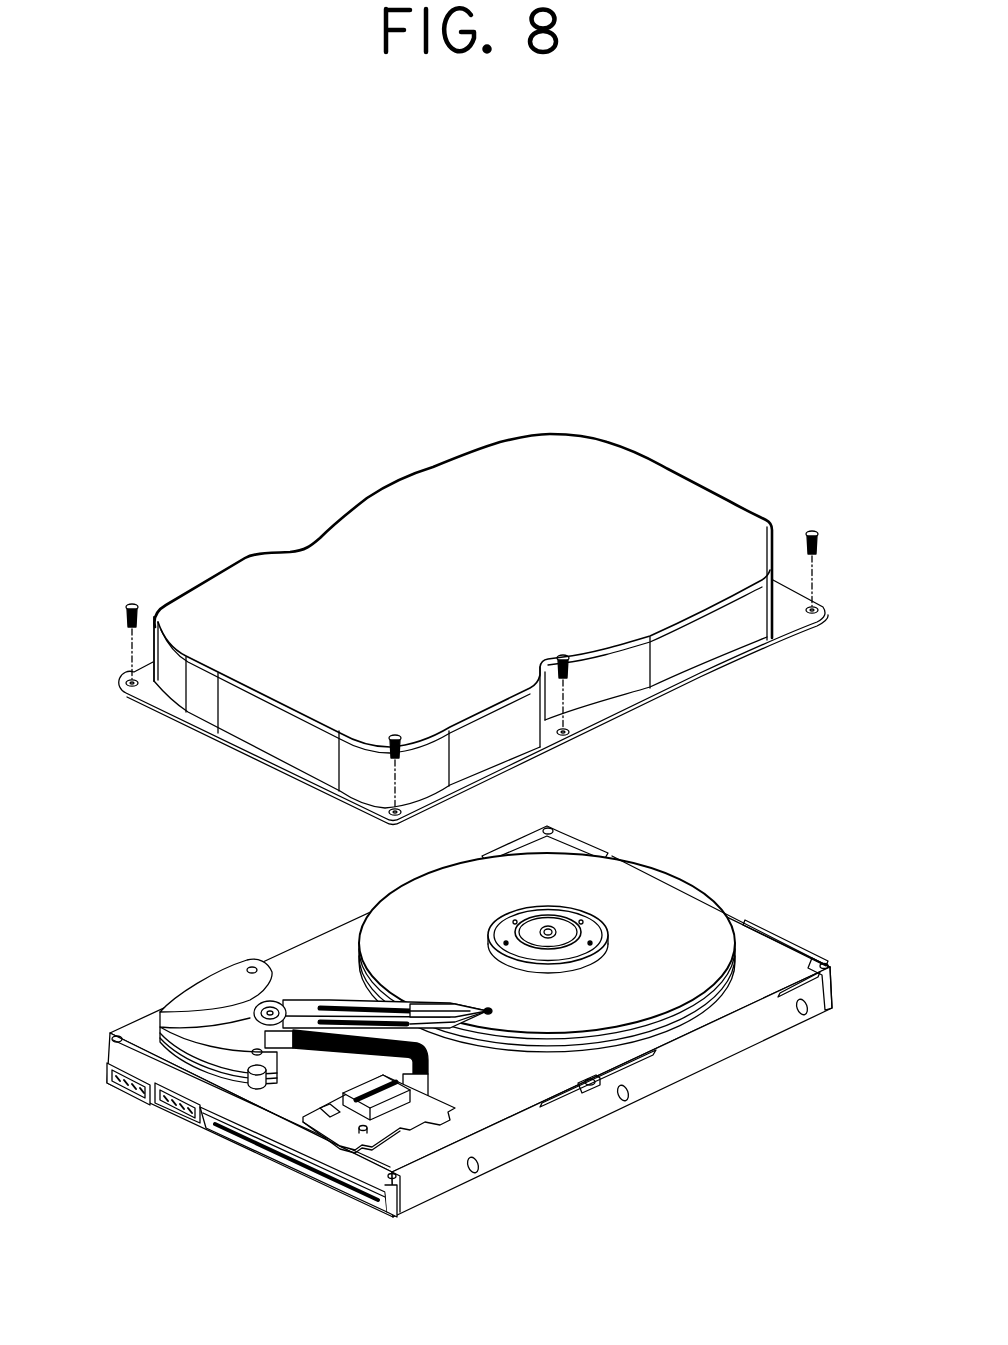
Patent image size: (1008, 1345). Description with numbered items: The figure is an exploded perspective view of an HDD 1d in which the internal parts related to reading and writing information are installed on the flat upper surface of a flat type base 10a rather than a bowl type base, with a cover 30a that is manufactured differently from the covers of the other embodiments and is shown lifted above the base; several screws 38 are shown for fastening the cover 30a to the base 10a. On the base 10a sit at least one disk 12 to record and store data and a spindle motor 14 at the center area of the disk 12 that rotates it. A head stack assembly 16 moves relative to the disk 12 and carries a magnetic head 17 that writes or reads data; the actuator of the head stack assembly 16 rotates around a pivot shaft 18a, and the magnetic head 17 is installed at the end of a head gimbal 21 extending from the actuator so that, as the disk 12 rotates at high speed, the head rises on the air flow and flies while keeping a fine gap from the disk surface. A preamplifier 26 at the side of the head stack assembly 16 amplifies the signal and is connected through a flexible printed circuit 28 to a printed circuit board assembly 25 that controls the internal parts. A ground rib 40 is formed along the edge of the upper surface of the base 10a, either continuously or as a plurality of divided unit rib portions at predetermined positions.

The HDD 1d is at (167, 513).
The cover 30a is at (397, 483).
The screw 38 is at (813, 532).
The base 10a is at (687, 1073).
The ground rib 40 is at (838, 975).
The disk 12 is at (587, 875).
The spindle motor 14 is at (605, 915).
The head stack assembly 16 is at (313, 993).
The pivot shaft 18a is at (247, 1002).
The head gimbal 21 is at (487, 1010).
The magnetic head 17 is at (494, 1013).
The flexible printed circuit 28 is at (205, 1113).
The preamplifier 26 is at (140, 1100).
The printed circuit board assembly 25 is at (345, 1202).